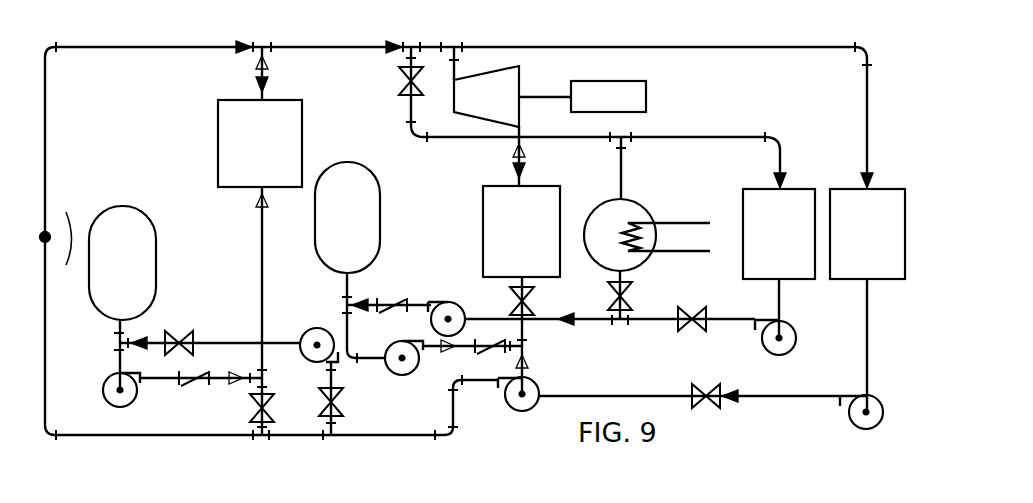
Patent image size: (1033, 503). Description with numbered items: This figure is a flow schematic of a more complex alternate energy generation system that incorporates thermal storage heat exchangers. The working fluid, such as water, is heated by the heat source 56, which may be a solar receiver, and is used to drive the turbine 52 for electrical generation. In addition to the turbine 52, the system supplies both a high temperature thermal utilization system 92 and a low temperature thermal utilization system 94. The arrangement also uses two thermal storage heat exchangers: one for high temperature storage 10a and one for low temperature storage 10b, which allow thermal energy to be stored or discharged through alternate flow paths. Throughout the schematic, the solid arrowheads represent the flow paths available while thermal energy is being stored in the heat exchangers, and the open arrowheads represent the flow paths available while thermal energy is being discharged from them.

The high temperature storage heat exchanger 10a is at (218, 138).
The low temperature storage heat exchanger 10b is at (483, 217).
The turbine 52 is at (519, 68).
The heat source 56 is at (45, 237).
The high temperature thermal utilization system 92 is at (855, 279).
The low temperature thermal utilization system 94 is at (791, 189).